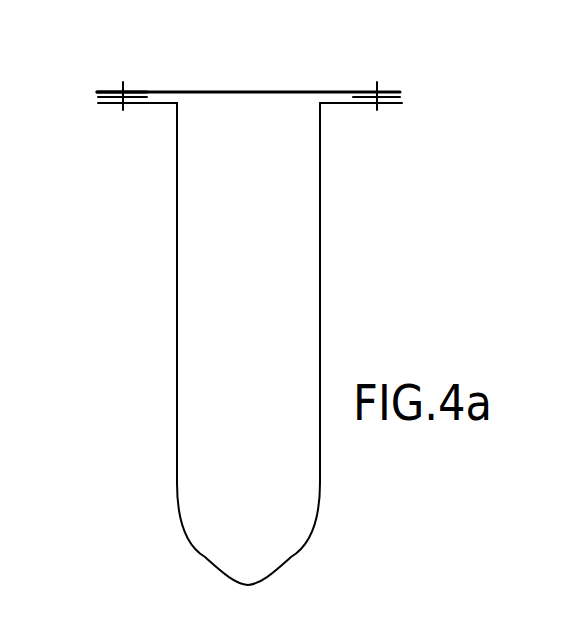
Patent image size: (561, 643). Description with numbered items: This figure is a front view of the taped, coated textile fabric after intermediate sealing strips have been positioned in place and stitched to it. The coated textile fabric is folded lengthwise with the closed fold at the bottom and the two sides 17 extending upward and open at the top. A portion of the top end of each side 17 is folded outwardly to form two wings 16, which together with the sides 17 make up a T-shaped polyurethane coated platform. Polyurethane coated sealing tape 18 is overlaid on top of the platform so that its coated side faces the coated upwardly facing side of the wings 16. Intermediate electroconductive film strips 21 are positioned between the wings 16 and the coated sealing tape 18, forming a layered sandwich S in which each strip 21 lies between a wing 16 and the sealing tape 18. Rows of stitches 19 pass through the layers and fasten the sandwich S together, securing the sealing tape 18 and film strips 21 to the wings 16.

The sandwich S is at (90, 90).
The wings 16 is at (152, 104).
The sides 17 is at (177, 392).
The sealing tape 18 is at (245, 92).
The stitches 19 is at (127, 82).
The intermediate electroconductive film strips 21 is at (105, 102).